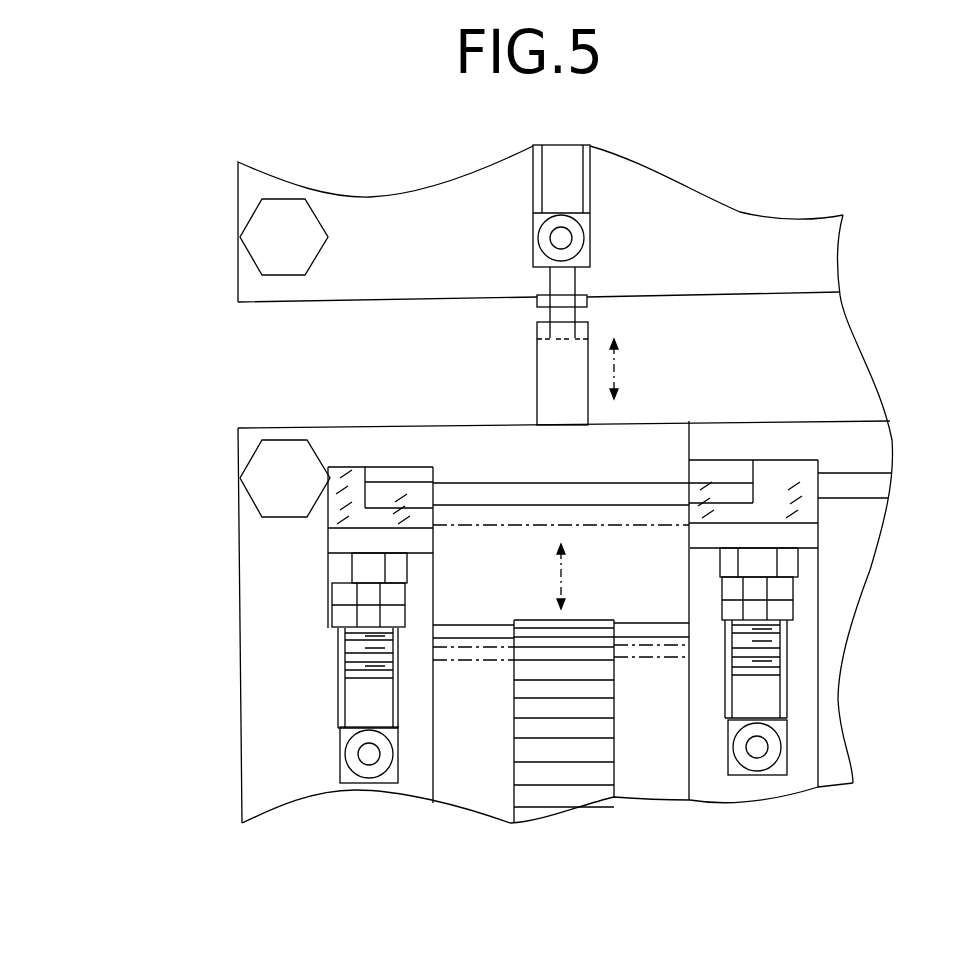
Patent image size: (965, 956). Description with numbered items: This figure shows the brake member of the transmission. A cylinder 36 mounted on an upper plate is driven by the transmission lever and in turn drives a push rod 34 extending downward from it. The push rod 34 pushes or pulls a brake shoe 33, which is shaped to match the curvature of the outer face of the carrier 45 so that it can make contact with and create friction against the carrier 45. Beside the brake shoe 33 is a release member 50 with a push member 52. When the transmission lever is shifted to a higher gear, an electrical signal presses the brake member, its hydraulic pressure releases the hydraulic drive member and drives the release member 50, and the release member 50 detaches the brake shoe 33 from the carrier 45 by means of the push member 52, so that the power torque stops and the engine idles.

The brake shoe 33 is at (653, 483).
The push rod 34 is at (556, 382).
The cylinder 36 is at (590, 238).
The carrier 45 is at (647, 767).
The release member 50 is at (350, 664).
The push member 52 is at (358, 572).